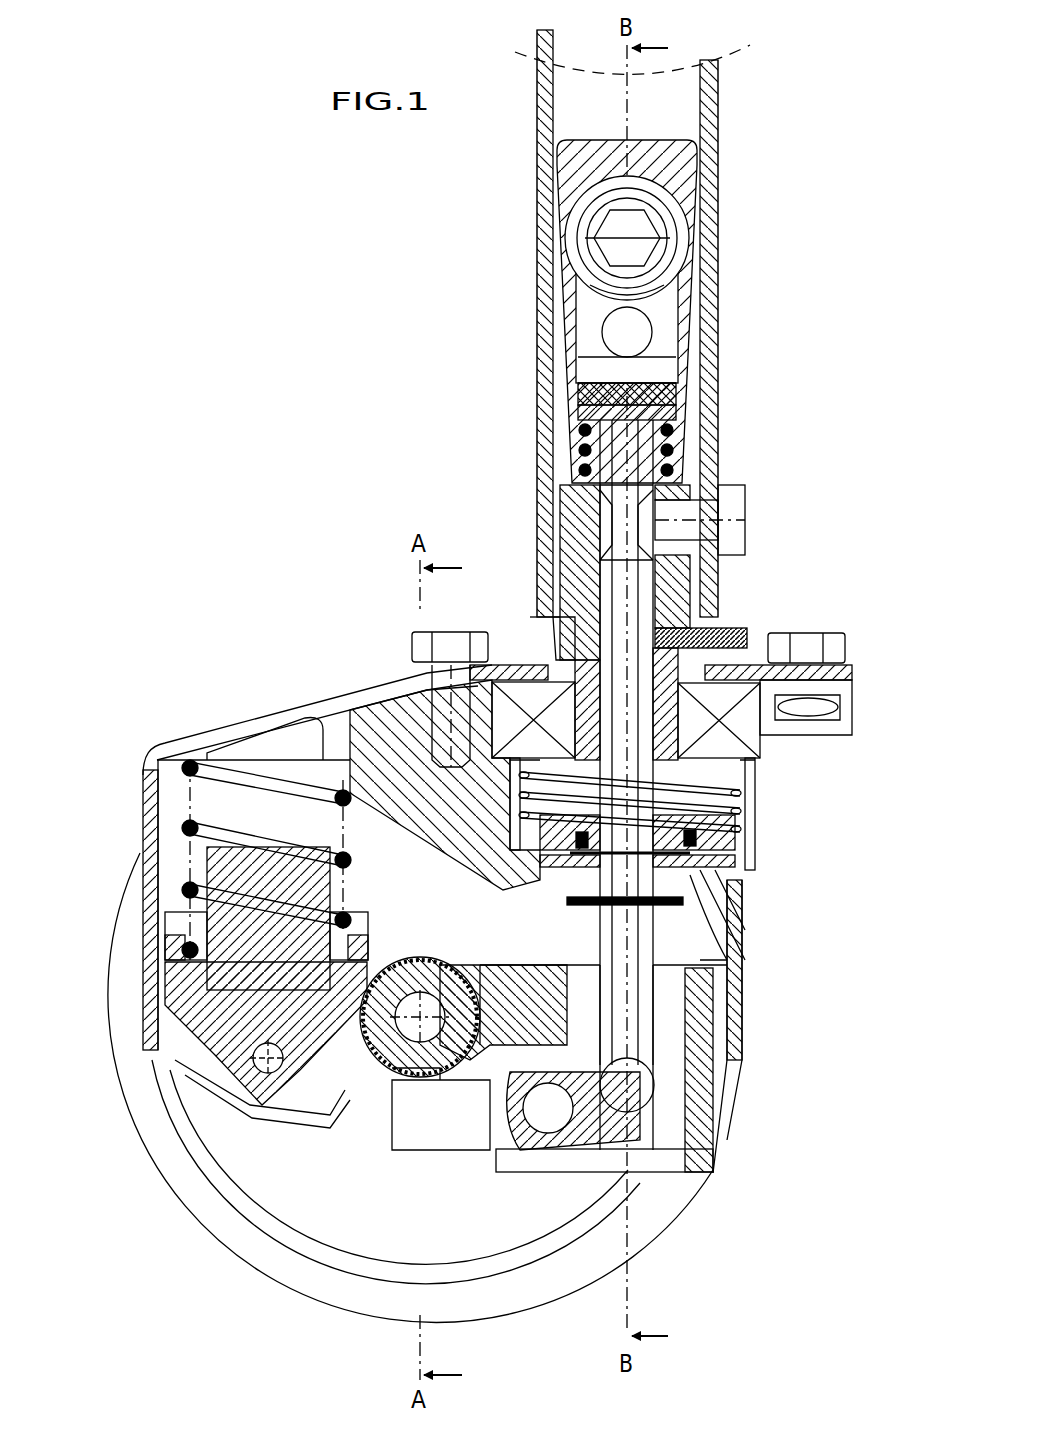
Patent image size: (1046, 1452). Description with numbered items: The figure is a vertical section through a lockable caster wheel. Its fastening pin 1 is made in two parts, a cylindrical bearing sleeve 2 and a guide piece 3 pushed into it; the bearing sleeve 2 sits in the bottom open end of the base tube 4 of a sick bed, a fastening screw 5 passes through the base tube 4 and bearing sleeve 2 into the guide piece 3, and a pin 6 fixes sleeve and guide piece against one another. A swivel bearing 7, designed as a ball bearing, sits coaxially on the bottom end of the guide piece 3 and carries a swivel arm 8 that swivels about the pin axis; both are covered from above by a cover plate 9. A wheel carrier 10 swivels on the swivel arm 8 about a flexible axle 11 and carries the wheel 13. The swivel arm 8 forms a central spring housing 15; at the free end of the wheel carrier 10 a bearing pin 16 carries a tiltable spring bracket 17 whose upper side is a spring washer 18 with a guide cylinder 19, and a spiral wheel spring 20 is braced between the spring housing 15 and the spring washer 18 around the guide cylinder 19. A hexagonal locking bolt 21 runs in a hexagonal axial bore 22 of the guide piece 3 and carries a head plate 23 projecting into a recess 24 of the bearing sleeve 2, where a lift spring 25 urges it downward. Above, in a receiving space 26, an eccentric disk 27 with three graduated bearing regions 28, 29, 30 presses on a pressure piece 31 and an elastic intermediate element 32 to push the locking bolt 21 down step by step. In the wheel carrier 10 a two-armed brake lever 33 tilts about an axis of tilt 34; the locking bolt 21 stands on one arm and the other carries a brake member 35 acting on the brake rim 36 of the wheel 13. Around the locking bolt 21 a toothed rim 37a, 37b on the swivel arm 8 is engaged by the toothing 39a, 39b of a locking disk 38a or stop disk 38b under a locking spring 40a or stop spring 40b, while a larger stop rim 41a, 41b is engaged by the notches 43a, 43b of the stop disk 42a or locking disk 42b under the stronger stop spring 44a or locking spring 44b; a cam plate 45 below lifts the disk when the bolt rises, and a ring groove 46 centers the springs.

The fastening pin 1 is at (535, 362).
The bearing sleeve 2 is at (565, 320).
The guide piece 3 is at (570, 522).
The base tube 4 is at (537, 130).
The fastening screw 5 is at (730, 520).
The pin 6 is at (720, 640).
The swivel bearing 7 is at (505, 700).
The swivel arm 8 is at (347, 690).
The cover plate 9 is at (518, 650).
The wheel carrier 10 is at (685, 1025).
The flexible axle 11 is at (700, 1095).
The wheel 13 is at (690, 1200).
The spring housing 15 is at (143, 796).
The bearing pin 16 is at (265, 1075).
The spring bracket 17 is at (215, 1000).
The spring washer 18 is at (175, 930).
The guide cylinder 19 is at (207, 880).
The wheel spring 20 is at (185, 828).
The locking bolt 21 is at (660, 990).
The axial bore 22 is at (690, 578).
The head plate 23 is at (668, 412).
The recess 24 is at (670, 445).
The lift spring 25 is at (672, 468).
The receiving space 26 is at (660, 330).
The eccentric disk 27 is at (656, 215).
The bearing region 28 is at (678, 232).
The bearing region 29 is at (672, 255).
The bearing region 30 is at (668, 285).
The pressure piece 31 is at (672, 352).
The elastic compressible intermediate element 32 is at (660, 390).
The brake lever 33 is at (500, 1110).
The axis of tilt 34 is at (548, 1135).
The brake member 35 is at (400, 1090).
The brake rim 36 is at (380, 1060).
The toothed rim 37a is at (761, 917).
The toothed rim 37b is at (735, 930).
The locking disk 38a is at (759, 967).
The stop disk 38b is at (735, 960).
The toothing 39a is at (773, 915).
The toothing 39b is at (745, 895).
The locking spring 40a is at (697, 830).
The stop spring 40b is at (690, 840).
The stop rim 41a is at (698, 873).
The stop rim 41b is at (745, 880).
The stop disk 42a is at (685, 790).
The locking disk 42b is at (700, 820).
The notches 43a is at (719, 848).
The notches 43b is at (700, 850).
The stop spring 44a is at (689, 808).
The locking spring 44b is at (720, 773).
The cam plate 45 is at (672, 905).
The ring groove 46 is at (562, 877).